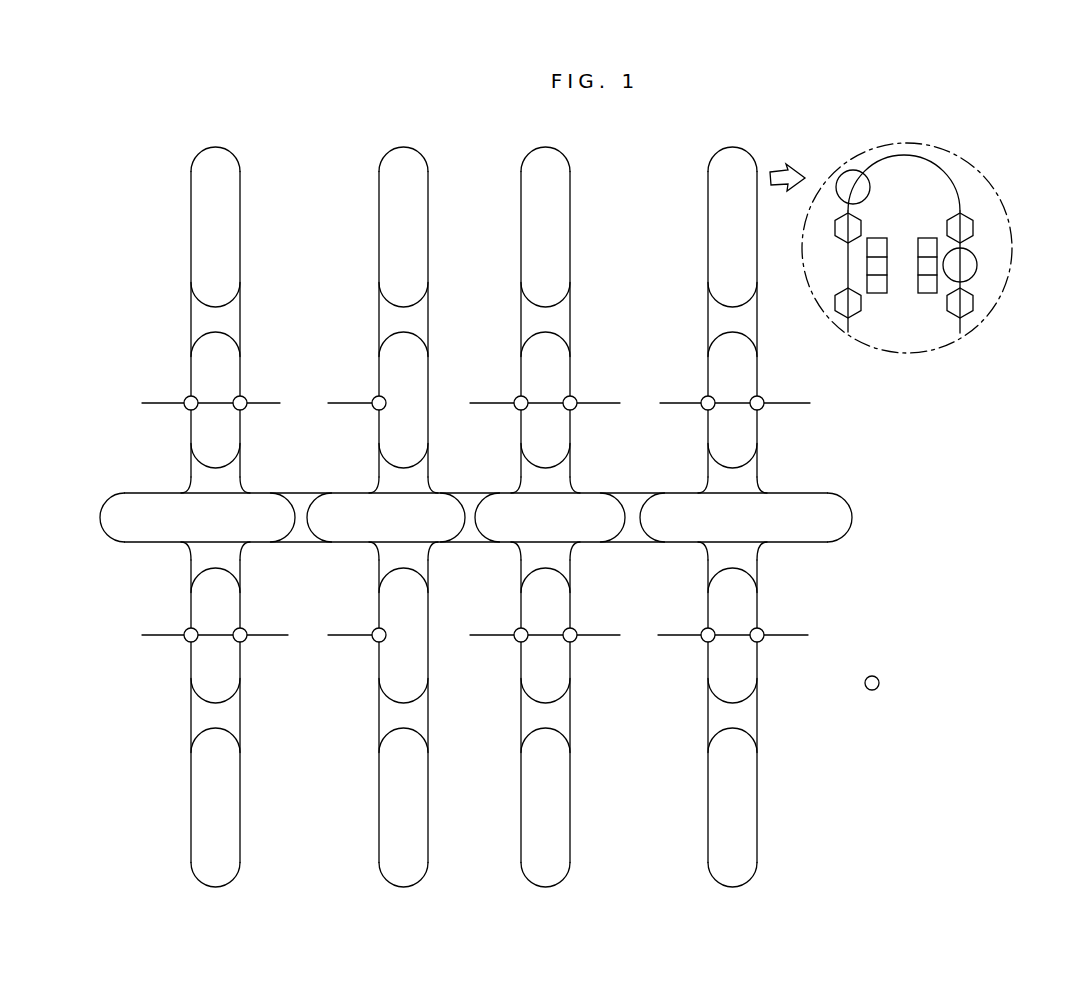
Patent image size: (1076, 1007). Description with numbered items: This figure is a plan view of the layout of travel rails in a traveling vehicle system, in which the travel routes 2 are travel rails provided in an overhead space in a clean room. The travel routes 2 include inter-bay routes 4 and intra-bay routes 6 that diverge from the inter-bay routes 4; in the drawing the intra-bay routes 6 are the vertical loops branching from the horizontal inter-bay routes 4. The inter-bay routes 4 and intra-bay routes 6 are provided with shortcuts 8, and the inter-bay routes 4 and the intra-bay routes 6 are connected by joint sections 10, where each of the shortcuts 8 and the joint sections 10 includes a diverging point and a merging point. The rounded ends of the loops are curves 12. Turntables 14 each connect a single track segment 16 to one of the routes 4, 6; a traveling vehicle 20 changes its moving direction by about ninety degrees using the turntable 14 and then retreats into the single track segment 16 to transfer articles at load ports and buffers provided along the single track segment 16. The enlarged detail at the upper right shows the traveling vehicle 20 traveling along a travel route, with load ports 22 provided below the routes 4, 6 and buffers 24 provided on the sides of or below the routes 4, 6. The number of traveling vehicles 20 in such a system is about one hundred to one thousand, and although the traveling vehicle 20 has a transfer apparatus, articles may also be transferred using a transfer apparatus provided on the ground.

The travel routes 2 is at (479, 909).
The inter-bay routes 4 is at (150, 493).
The intra-bay routes 6 is at (242, 224).
The shortcuts 8 is at (225, 337).
The joint sections 10 is at (474, 520).
The curves 12 is at (231, 156).
The turntables 14 is at (196, 410).
The single track segment 16 is at (162, 403).
The traveling vehicle 20 is at (870, 187).
The load ports 22 is at (860, 228).
The buffers 24 is at (926, 285).